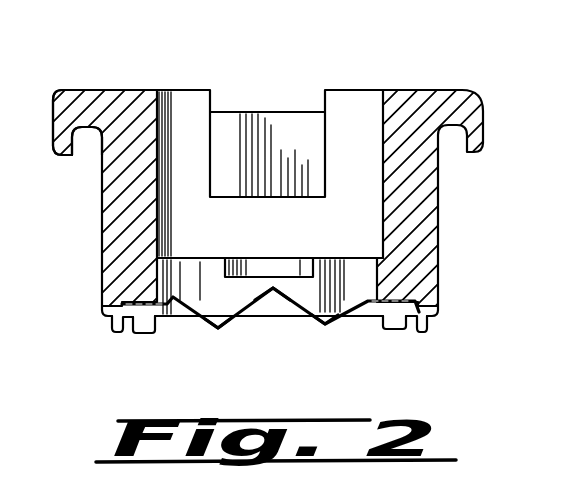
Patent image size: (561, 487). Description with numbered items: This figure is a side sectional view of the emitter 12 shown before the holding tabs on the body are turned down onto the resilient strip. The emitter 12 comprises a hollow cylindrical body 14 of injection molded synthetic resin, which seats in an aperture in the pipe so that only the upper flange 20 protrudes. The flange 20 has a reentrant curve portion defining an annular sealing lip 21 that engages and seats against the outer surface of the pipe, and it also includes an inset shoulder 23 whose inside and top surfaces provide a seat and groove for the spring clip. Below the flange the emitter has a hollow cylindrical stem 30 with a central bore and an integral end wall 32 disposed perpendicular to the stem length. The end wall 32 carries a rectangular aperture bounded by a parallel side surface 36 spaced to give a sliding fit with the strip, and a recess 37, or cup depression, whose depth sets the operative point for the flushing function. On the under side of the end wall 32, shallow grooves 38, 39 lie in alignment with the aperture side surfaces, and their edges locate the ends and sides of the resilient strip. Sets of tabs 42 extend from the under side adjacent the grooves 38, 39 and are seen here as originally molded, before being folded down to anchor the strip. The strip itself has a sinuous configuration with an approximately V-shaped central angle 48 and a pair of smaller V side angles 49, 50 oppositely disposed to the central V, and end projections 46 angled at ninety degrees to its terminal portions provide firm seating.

The emitter 12 is at (424, 79).
The hollow cylindrical body 14 is at (430, 221).
The upper flange 20 is at (58, 106).
The annular sealing lip 21 is at (64, 160).
The inset shoulder 23 is at (286, 108).
The hollow cylindrical stem 30 is at (166, 108).
The end wall 32 is at (392, 293).
The parallel side surface 36 is at (356, 272).
The recess 37 is at (257, 270).
The shallow groove 38 is at (165, 318).
The shallow groove 39 is at (370, 318).
The tab 42 is at (113, 332).
The end projection 46 is at (139, 335).
The central angle 48 is at (273, 292).
The side angle 49 is at (325, 327).
The side angle 50 is at (218, 331).